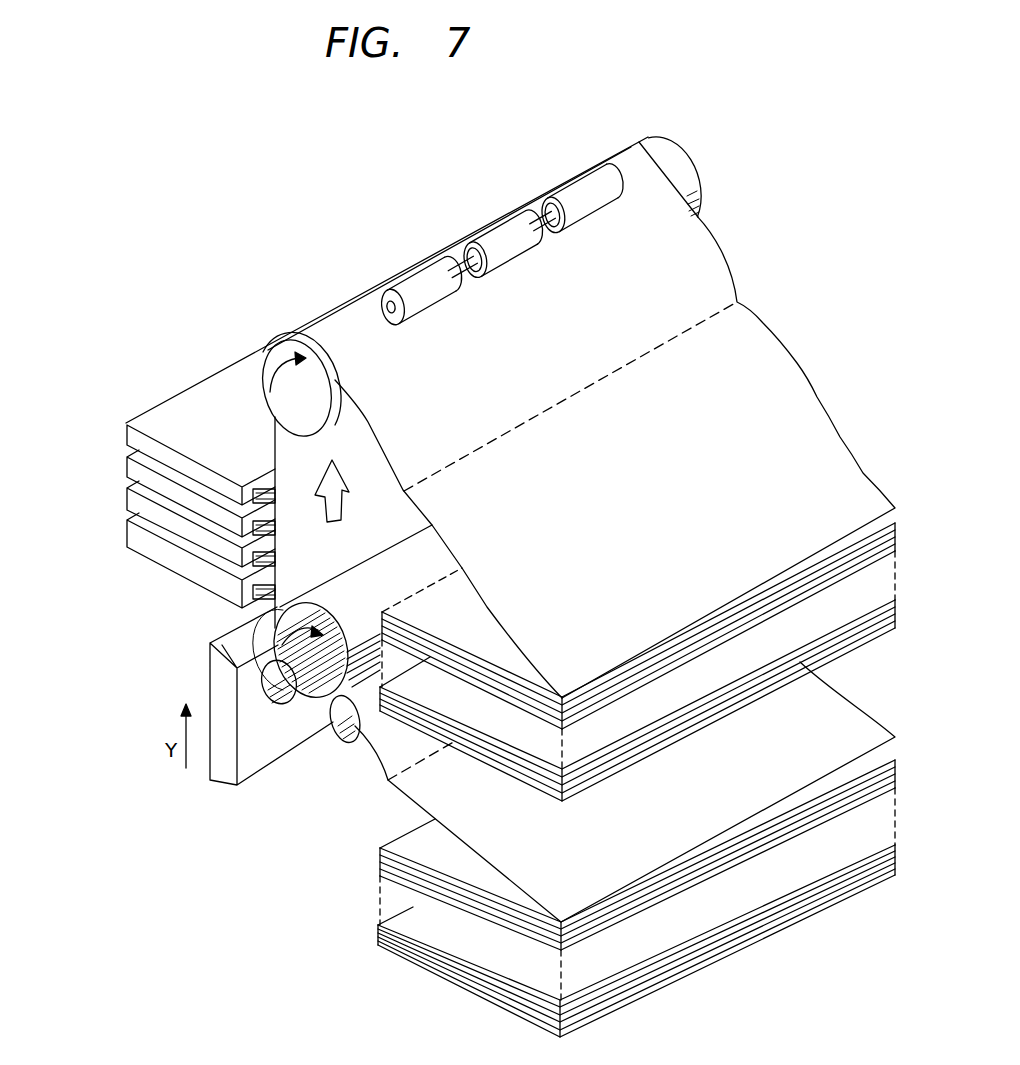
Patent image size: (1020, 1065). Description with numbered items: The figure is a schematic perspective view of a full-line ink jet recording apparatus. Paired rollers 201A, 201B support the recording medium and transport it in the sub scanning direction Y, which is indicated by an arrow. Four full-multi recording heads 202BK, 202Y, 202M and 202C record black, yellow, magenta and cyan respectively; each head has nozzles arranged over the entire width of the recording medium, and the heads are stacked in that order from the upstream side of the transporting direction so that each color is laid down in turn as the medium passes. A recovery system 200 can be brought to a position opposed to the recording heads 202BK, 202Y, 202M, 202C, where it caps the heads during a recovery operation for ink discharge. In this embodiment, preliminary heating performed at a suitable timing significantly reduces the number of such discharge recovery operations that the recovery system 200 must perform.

The recovery system 200 is at (210, 677).
The paired roller 201A is at (638, 137).
The paired roller 201B is at (282, 705).
The full-multi recording head 202C is at (127, 438).
The full-multi recording head 202M is at (127, 470).
The full-multi recording head 202Y is at (127, 505).
The full-multi recording head 202BK is at (127, 540).